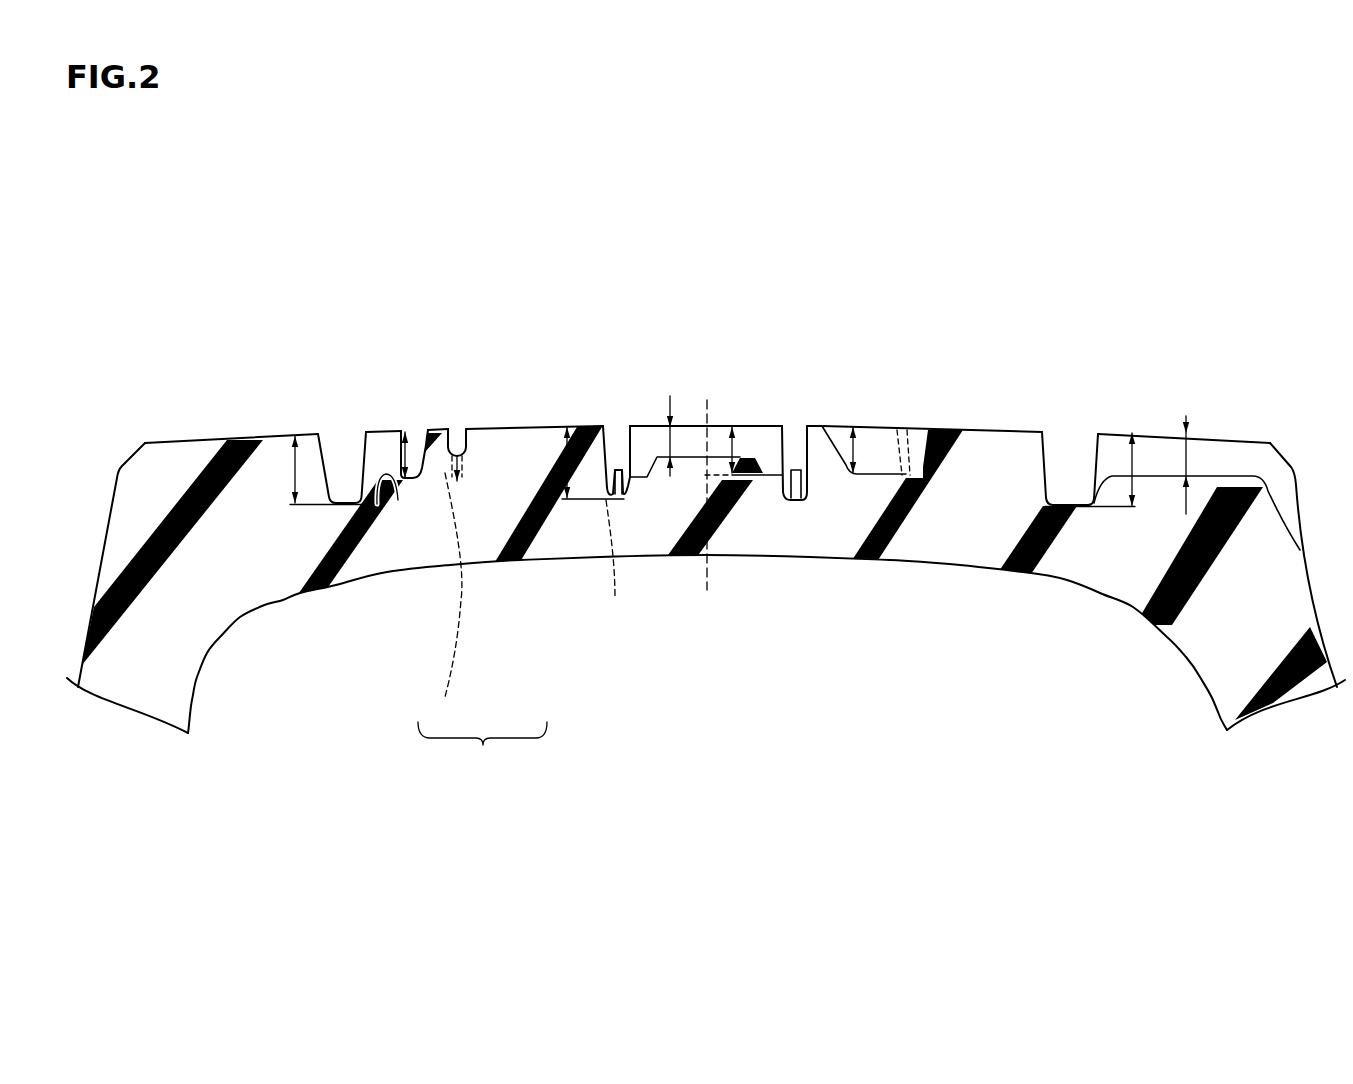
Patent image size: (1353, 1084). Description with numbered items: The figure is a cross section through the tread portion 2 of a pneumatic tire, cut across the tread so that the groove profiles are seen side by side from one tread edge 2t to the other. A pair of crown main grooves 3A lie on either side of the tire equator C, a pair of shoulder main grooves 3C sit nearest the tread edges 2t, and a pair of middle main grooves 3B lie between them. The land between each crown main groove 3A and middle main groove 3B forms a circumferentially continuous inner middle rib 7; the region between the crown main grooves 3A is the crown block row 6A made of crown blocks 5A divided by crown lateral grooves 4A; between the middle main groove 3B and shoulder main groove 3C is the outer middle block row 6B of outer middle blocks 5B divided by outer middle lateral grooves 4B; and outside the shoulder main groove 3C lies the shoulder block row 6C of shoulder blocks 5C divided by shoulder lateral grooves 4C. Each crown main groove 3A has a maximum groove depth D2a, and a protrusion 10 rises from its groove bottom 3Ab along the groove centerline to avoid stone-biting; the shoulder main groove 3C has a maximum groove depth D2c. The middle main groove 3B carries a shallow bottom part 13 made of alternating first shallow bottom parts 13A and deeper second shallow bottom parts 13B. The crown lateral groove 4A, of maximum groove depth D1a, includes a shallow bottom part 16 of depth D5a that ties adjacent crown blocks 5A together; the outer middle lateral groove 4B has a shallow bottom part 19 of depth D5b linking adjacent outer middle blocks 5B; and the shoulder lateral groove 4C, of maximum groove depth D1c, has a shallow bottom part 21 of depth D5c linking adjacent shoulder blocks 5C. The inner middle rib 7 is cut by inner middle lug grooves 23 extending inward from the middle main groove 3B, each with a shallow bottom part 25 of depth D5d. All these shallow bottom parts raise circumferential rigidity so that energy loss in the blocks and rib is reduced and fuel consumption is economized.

The tread portion 2 is at (1094, 226).
The tread edge 2t is at (146, 442).
The crown main groove 3A is at (694, 489).
The groove bottom protrusion 3Ab is at (612, 500).
The middle main groove 3B is at (457, 431).
The shoulder main groove 3C is at (333, 440).
The crown lateral groove 4A is at (740, 453).
The outer middle lateral groove 4B is at (416, 448).
The shoulder lateral groove 4C is at (1112, 447).
The crown block 5A is at (700, 423).
The outer middle block 5B is at (1000, 427).
The shoulder block 5C is at (210, 437).
The crown block row 6A is at (706, 356).
The outer middle block row 6B is at (754, 334).
The shoulder block row 6C is at (707, 339).
The inner middle rib 7 is at (558, 424).
The protrusion 10 is at (633, 472).
The shallow bottom part 13 is at (741, 613).
The first shallow bottom part 13A is at (466, 445).
The second shallow bottom part 13B is at (446, 602).
The shallow bottom part 16 is at (722, 466).
The shallow bottom part 19 is at (377, 504).
The shallow bottom part 21 is at (1233, 482).
The inner middle lug groove 23 is at (877, 578).
The shallow bottom part 25 is at (860, 477).
The tire equator C is at (706, 481).
The maximum groove depth D2c is at (294, 474).
The depth D5b is at (400, 456).
The maximum groove depth D2a is at (566, 466).
The depth D5a is at (631, 480).
The maximum groove depth D1a is at (721, 480).
The depth D5d is at (850, 457).
The maximum groove depth D1c is at (1140, 473).
The depth D5c is at (1195, 458).